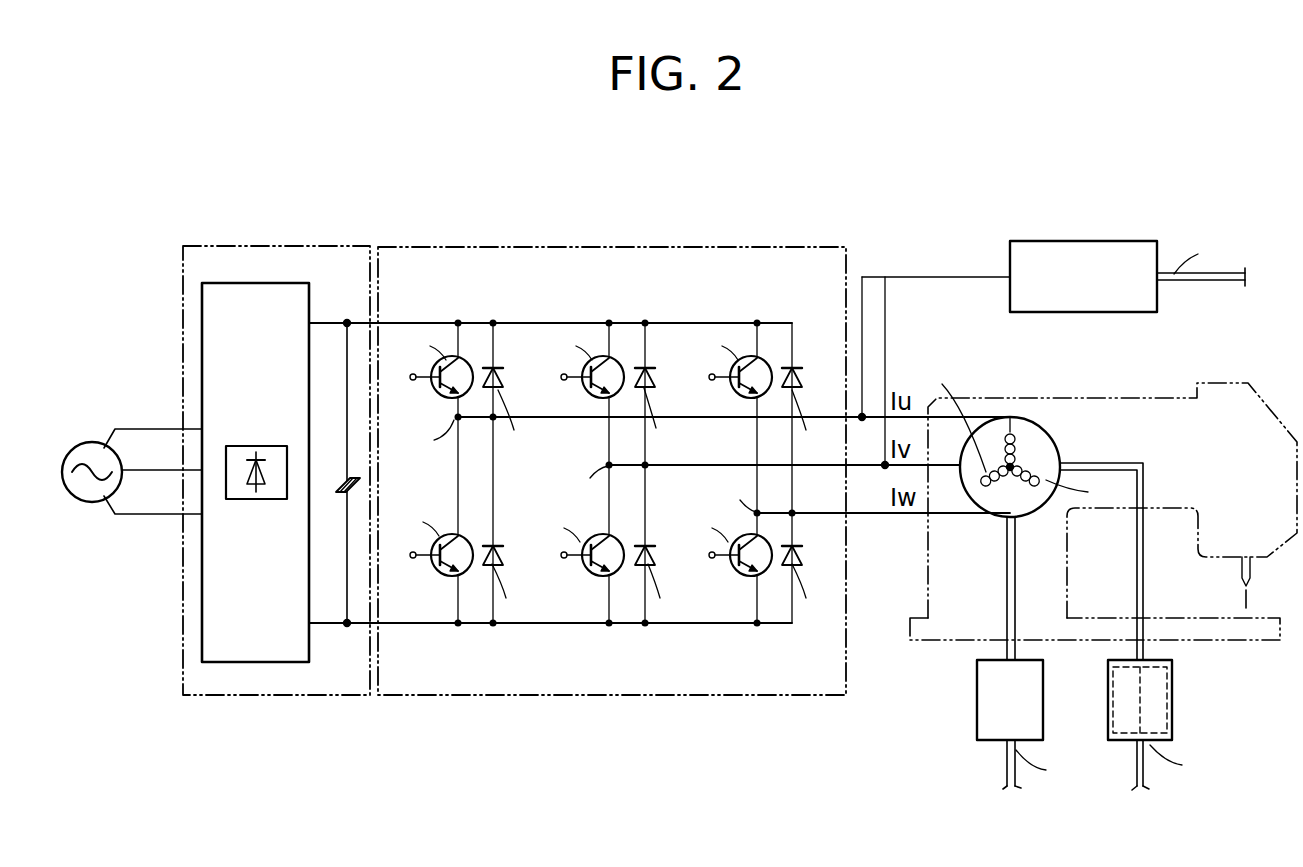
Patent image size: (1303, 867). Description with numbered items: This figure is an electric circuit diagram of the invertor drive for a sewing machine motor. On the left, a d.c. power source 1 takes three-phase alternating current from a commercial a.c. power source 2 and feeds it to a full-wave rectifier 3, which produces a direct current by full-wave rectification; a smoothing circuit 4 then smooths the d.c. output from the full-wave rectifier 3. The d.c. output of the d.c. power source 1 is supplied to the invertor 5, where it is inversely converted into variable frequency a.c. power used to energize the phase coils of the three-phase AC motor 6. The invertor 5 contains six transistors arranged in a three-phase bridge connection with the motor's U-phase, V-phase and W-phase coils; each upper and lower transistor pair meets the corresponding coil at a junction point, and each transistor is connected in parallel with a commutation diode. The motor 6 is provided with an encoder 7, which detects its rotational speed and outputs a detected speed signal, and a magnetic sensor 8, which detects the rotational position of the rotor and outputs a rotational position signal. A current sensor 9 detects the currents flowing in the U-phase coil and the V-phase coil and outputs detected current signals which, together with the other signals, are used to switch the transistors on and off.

The d.c. power source 1 is at (338, 246).
The commercial a.c. power source 2 is at (86, 444).
The full-wave rectifier 3 is at (310, 302).
The smoothing circuit 4 is at (340, 478).
The invertor 5 is at (592, 247).
The three-phase AC motor 6 is at (1058, 440).
The encoder 7 is at (1172, 680).
The magnetic sensor 8 is at (977, 680).
The current sensor 9 is at (1068, 241).